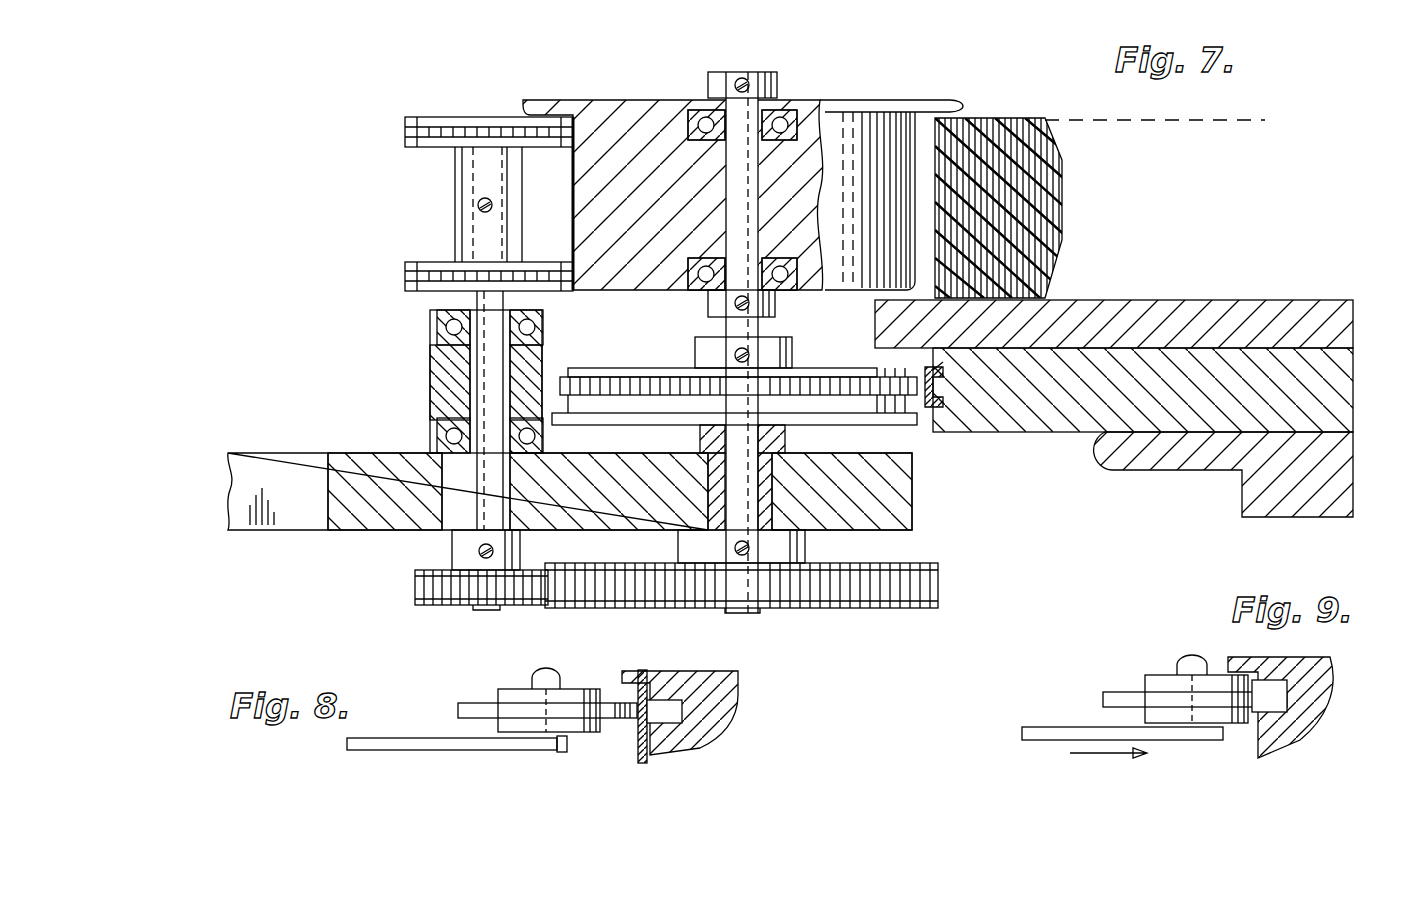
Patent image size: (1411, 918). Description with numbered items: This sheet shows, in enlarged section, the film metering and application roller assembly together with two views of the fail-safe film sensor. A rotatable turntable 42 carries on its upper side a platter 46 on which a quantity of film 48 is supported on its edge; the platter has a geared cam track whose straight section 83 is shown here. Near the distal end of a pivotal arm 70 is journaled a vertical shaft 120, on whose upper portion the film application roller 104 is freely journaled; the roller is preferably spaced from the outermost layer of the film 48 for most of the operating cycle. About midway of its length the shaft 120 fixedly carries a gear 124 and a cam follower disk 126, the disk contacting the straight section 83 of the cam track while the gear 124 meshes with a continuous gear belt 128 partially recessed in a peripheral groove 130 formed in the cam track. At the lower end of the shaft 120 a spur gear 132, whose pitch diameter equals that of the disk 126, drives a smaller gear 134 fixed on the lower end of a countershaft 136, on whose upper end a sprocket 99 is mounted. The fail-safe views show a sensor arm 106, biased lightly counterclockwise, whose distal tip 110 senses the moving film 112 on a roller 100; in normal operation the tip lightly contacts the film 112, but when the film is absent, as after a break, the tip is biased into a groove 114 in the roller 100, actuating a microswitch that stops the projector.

In FIG. 7, the turntable 42 is at (1172, 455).
In FIG. 7, the platter 46 is at (1233, 293).
In FIG. 7, the film 48 is at (1020, 116).
In FIG. 7, the pivotal arm 70 is at (296, 448).
In FIG. 7, the straight section 83 is at (938, 432).
In FIG. 7, the sprocket 99 is at (455, 184).
In FIG. 8, the roller 100 is at (697, 737).
In FIG. 9, the roller 100 is at (1280, 740).
In FIG. 7, the film application roller 104 is at (620, 115).
In FIG. 8, the sensor arm 106 is at (420, 740).
In FIG. 9, the sensor arm 106 is at (1050, 727).
In FIG. 8, the distal tip 110 is at (490, 712).
In FIG. 9, the distal tip 110 is at (1123, 697).
In FIG. 7, the film 112 is at (570, 196).
In FIG. 8, the film 112 is at (638, 748).
In FIG. 8, the groove 114 is at (682, 712).
In FIG. 9, the groove 114 is at (1285, 700).
In FIG. 7, the vertical shaft 120 is at (731, 326).
In FIG. 7, the gear 124 is at (818, 385).
In FIG. 7, the cam follower disk 126 is at (610, 415).
In FIG. 7, the gear belt 128 is at (940, 372).
In FIG. 7, the peripheral groove 130 is at (945, 395).
In FIG. 7, the spur gear 132 is at (905, 580).
In FIG. 7, the smaller gear 134 is at (415, 580).
In FIG. 7, the countershaft 136 is at (485, 472).